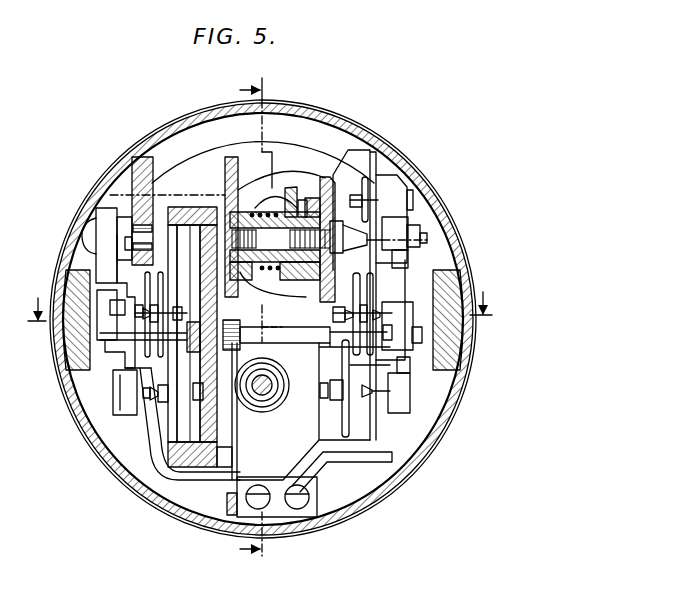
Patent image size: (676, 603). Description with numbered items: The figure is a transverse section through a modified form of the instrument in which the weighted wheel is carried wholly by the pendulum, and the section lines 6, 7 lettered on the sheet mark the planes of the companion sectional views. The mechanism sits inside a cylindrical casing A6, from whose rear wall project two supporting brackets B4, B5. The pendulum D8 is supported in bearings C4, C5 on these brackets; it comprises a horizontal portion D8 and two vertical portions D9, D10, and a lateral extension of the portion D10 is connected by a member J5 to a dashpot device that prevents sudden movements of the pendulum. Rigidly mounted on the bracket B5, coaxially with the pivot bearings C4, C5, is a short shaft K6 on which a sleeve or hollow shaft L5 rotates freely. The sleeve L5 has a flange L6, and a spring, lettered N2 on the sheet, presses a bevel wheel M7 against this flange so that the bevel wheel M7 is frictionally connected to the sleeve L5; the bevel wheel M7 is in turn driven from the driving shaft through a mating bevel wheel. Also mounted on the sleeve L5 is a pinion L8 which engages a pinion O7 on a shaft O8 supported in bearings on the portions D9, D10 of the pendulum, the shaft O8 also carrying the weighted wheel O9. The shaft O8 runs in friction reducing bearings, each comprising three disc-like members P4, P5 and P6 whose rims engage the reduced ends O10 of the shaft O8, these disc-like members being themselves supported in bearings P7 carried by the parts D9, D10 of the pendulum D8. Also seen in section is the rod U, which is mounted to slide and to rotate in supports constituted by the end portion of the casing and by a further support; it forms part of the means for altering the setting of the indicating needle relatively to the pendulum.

The supporting bracket B5 is at (382, 152).
The section line 7 is at (256, 319).
The section line 6 is at (259, 313).
The supporting bracket B4 is at (140, 165).
The bearing C4 is at (150, 262).
The shaft O8 is at (198, 210).
The pinion O7 is at (210, 418).
The weighted wheel O9 is at (233, 468).
The pinion L8 is at (234, 195).
The bevel wheel M7 is at (297, 190).
The dome N2 is at (255, 205).
The sleeve or hollow shaft L5 is at (253, 208).
The rod U is at (277, 389).
The pendulum D8 is at (228, 472).
The vertical portion of pendulum D10 is at (378, 438).
The cylindrical casing A6 is at (130, 410).
The vertical portion of pendulum D9 is at (127, 367).
The reduced ends of shaft O10 is at (80, 340).
The disc-like member P5 is at (148, 272).
The disc-like member P4 is at (158, 296).
The bearings P7 is at (135, 316).
The disc-like member P6 is at (165, 425).
The flange L6 is at (343, 153).
The member J5 is at (372, 182).
The short shaft K6 is at (390, 230).
The bearing C5 is at (425, 241).